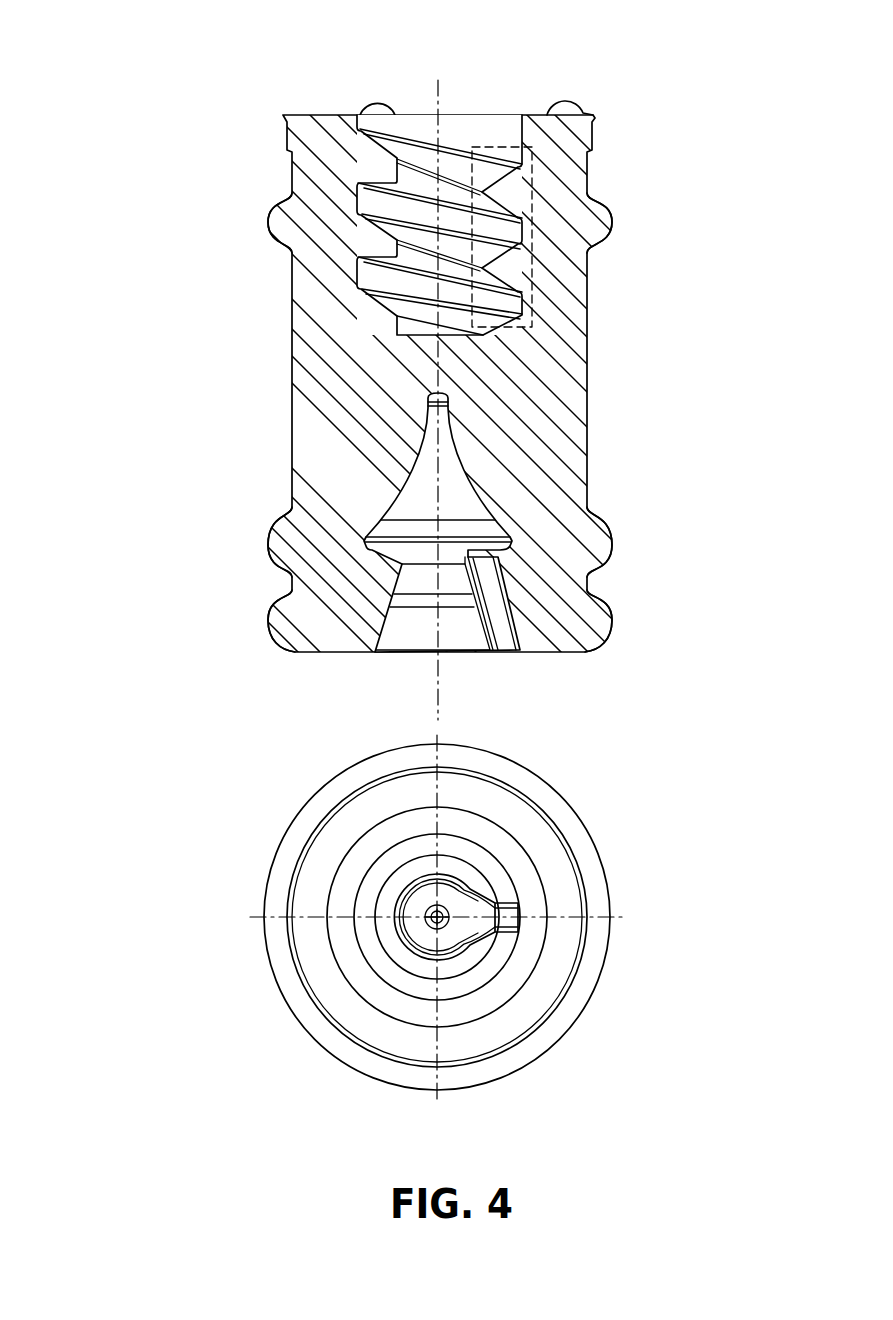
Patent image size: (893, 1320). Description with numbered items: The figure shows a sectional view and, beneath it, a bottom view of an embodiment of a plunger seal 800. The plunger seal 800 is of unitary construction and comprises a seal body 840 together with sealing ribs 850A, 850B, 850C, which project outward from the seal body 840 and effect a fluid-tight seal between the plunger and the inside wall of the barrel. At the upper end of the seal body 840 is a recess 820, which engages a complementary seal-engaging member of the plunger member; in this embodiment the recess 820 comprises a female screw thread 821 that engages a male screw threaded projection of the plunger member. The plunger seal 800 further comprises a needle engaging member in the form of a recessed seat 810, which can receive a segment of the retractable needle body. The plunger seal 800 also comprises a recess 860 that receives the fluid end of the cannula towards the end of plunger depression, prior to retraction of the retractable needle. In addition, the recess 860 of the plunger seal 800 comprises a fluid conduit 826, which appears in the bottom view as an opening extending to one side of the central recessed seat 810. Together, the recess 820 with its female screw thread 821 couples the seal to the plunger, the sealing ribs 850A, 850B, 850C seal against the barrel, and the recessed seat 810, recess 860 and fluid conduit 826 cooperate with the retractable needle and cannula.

The plunger seal 800 is at (625, 397).
The recessed seat 810 is at (404, 655).
The recess 820 is at (553, 178).
The female screw thread 821 is at (490, 240).
The fluid conduit 826 is at (503, 628).
The seal body 840 is at (302, 382).
The sealing rib 850A is at (266, 228).
The sealing rib 850B is at (266, 552).
The sealing rib 850C is at (266, 633).
The recess 860 is at (497, 740).